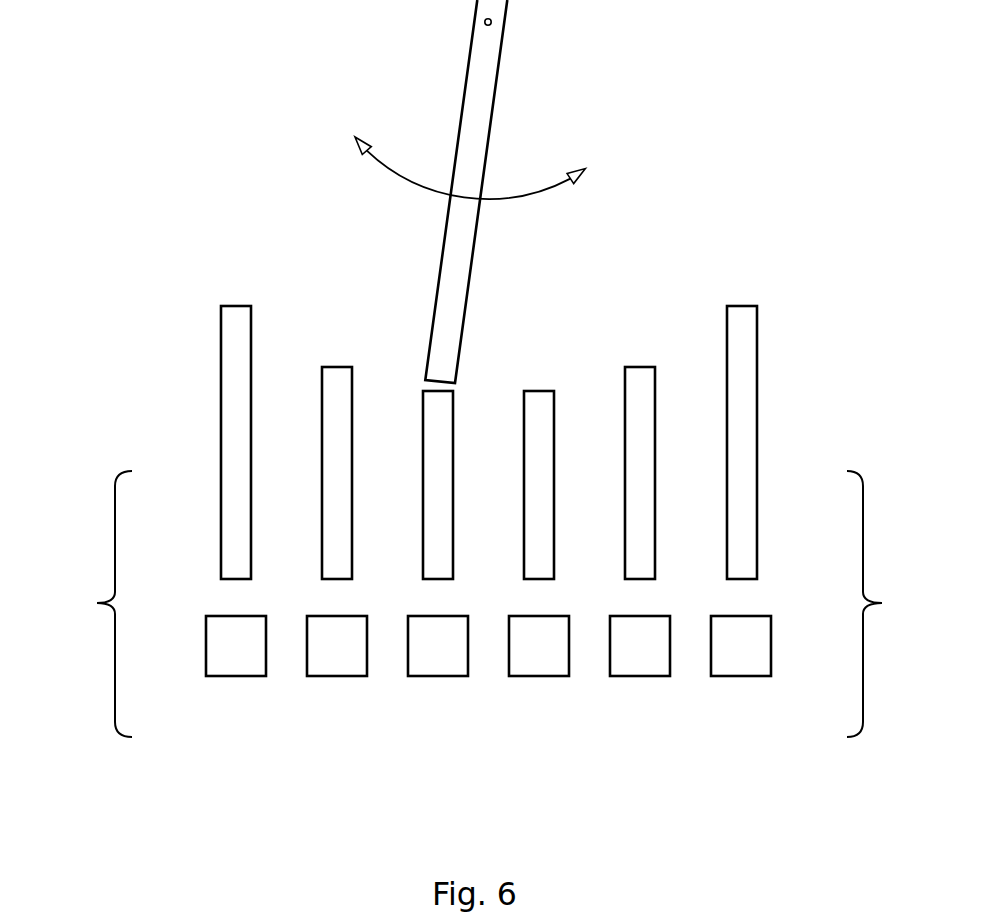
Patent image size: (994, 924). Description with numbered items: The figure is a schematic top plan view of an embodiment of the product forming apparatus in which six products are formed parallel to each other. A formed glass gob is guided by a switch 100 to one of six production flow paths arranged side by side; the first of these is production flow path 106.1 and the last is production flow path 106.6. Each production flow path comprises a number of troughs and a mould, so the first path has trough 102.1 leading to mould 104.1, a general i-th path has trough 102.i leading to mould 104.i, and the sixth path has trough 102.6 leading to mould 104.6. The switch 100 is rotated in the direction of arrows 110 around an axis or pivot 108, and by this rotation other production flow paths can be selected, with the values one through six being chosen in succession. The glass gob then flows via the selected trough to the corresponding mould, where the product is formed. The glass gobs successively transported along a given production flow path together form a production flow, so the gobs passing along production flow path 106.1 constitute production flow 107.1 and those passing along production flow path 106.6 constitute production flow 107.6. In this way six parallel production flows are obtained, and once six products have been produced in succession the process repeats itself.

The switch 100 is at (495, 90).
The axis (pivot) 108 is at (491, 22).
The arrows 110 is at (405, 177).
The trough 102.1 is at (221, 493).
The trough 102.i is at (423, 492).
The trough 102.6 is at (757, 495).
The mould 104.1 is at (206, 646).
The mould 104.i is at (438, 655).
The mould 104.6 is at (771, 647).
The production flow path 106.1 is at (81, 604).
The production flow 107.1 is at (81, 604).
The production flow path 106.6 is at (897, 604).
The production flow 107.6 is at (897, 604).